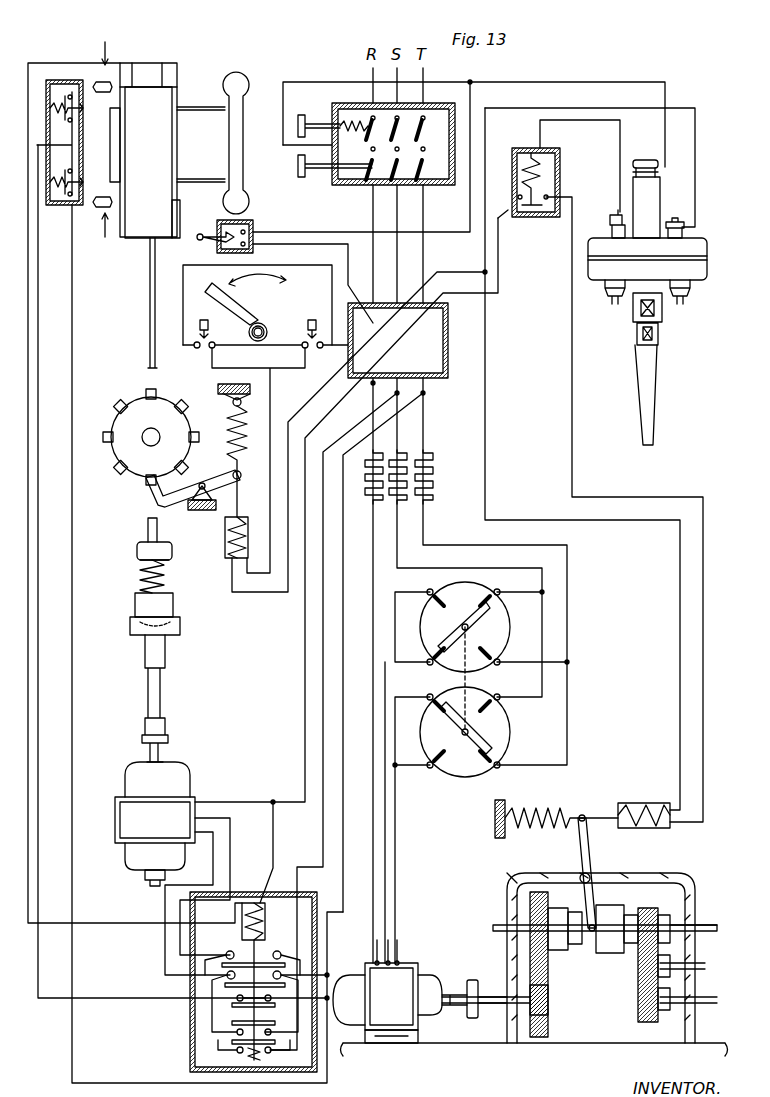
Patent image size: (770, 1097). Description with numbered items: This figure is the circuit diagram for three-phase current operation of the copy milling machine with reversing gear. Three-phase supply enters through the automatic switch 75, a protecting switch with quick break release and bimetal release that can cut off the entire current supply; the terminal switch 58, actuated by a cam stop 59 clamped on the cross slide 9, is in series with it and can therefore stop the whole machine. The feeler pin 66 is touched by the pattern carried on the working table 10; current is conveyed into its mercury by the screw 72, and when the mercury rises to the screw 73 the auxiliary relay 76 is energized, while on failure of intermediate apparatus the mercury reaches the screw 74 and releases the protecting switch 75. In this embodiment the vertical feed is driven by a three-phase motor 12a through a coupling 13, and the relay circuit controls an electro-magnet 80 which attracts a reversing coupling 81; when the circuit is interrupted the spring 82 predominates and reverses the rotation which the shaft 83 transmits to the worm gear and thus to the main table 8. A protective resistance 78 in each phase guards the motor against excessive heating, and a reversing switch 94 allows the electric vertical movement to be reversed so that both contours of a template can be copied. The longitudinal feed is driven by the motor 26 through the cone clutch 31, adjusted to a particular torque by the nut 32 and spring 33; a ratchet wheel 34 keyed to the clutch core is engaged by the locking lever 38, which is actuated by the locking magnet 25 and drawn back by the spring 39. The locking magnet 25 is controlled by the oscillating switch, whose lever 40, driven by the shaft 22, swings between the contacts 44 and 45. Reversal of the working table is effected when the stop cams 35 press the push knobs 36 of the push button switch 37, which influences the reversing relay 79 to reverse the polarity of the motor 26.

The main table 8 is at (236, 76).
The cross slide 9 is at (172, 72).
The working table 10 is at (135, 232).
The three-phase motor 12a is at (405, 968).
The coupling 13 is at (470, 980).
The shaft 22 is at (262, 340).
The locking magnet 25 is at (225, 540).
The motor 26 is at (185, 782).
The cone clutch 31 is at (173, 605).
The nut 32 is at (136, 550).
The spring 33 is at (166, 578).
The ratchet wheel 34 is at (138, 408).
The stop cams 35 is at (92, 80).
The push knobs 36 is at (84, 110).
The push button switch 37 is at (72, 158).
The locking lever 38 is at (155, 490).
The spring 39 is at (224, 430).
The oscillating switch lever 40 is at (236, 310).
The contact 44 is at (208, 330).
The contact 45 is at (310, 320).
The terminal switch 58 is at (252, 222).
The cam stop 59 is at (176, 238).
The feeler pin 66 is at (644, 285).
The screw 72 is at (677, 218).
The screw 73 is at (612, 222).
The screw 74 is at (644, 158).
The automatic switch 75 is at (335, 103).
The auxiliary relay 76 is at (557, 168).
The protective resistance 78 is at (366, 495).
The reversing relay 79 is at (195, 1035).
The electro-magnet 80 is at (634, 803).
The reversing coupling 81 is at (580, 945).
The spring 82 is at (536, 826).
The shaft 83 is at (700, 928).
The reversing switch 94 is at (458, 768).